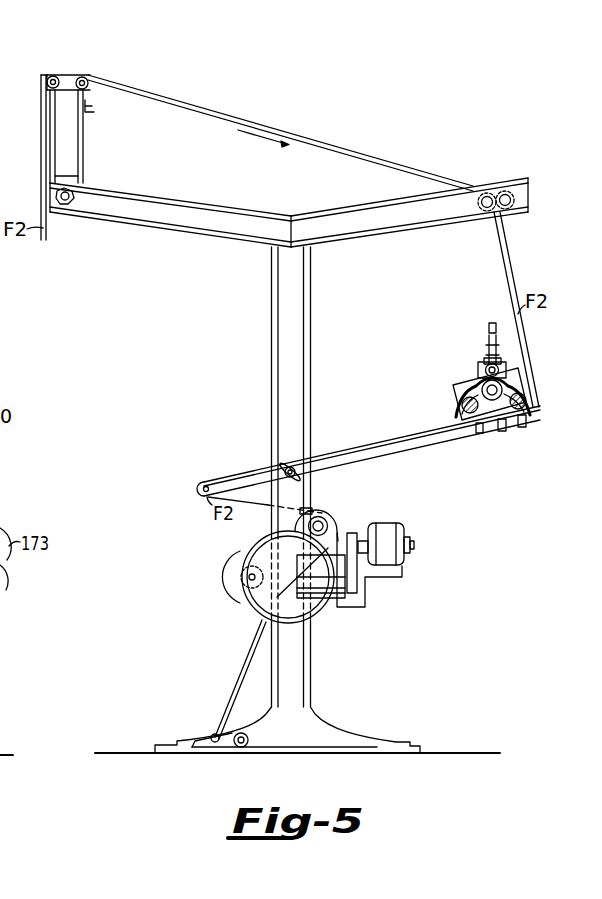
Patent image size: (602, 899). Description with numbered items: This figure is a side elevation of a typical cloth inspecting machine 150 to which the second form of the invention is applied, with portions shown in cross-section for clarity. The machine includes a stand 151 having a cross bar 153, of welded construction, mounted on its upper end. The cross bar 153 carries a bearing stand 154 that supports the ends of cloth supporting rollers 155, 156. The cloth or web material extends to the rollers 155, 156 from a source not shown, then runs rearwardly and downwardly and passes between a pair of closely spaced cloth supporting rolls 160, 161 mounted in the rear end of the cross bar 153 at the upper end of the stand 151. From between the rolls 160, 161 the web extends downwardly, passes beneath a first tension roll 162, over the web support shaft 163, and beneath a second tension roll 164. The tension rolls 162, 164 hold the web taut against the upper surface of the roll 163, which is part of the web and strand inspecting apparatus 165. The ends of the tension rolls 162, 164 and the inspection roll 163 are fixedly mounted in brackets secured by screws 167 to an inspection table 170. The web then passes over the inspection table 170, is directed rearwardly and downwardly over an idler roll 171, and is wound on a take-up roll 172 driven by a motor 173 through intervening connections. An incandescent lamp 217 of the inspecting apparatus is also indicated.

The cloth inspecting machine 150 is at (266, 409).
The stand 151 is at (311, 401).
The cross bar 153 is at (180, 232).
The bearing stand 154 is at (83, 151).
The cloth supporting roller 155 is at (47, 76).
The cloth supporting roller 156 is at (88, 92).
The cloth supporting roll 160 is at (481, 204).
The cloth supporting roll 161 is at (514, 199).
The first tension roll 162 is at (530, 398).
The web support shaft 163 is at (495, 401).
The second tension roll 164 is at (462, 408).
The web and strand inspecting apparatus 165 is at (477, 372).
The screw 167 is at (523, 428).
The inspection table 170 is at (375, 447).
The idler roll 171 is at (328, 512).
The take-up roll 172 is at (240, 581).
The motor 173 is at (408, 532).
The incandescent lamp 217 is at (497, 308).